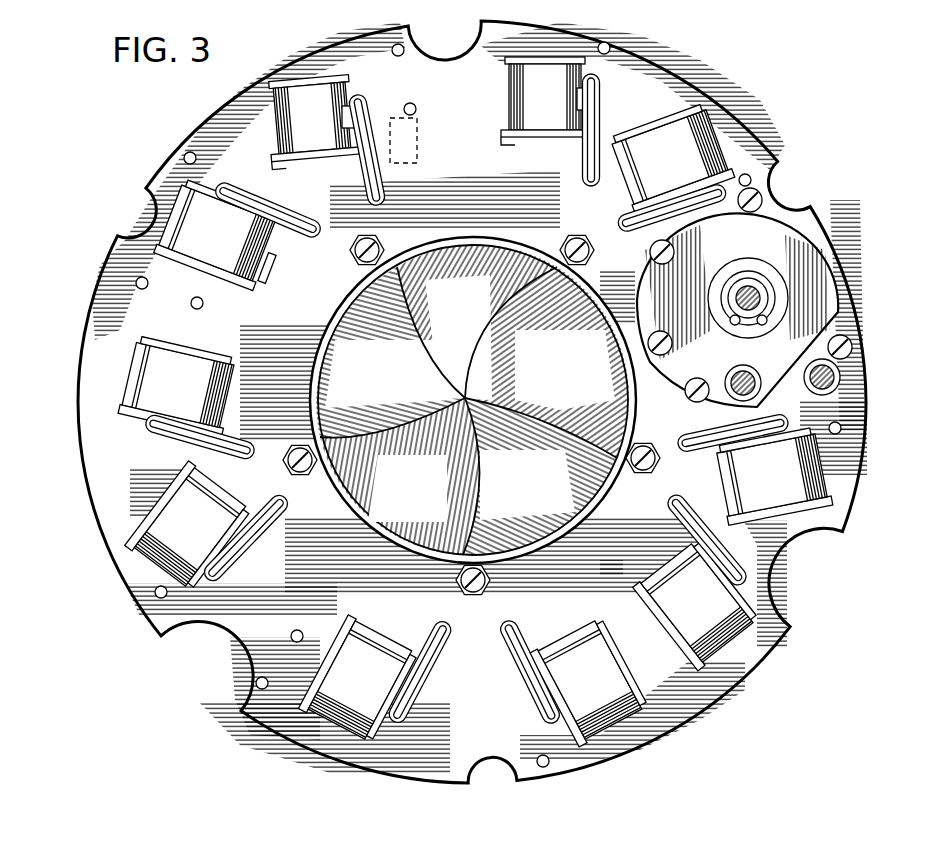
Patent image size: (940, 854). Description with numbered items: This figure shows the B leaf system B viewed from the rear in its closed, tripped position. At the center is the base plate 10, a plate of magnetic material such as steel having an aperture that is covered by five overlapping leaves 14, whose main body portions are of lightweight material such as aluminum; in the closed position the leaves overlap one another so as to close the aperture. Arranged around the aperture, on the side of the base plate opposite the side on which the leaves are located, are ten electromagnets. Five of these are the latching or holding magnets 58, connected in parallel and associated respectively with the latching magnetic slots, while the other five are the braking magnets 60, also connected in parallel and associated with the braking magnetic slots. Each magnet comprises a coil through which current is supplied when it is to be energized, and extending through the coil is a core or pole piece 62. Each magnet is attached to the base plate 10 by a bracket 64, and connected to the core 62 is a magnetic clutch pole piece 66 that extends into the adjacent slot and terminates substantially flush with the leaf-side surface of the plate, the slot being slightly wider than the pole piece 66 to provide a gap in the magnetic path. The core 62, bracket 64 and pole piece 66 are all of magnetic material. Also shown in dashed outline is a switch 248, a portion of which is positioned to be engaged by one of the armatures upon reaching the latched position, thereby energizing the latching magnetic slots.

The base plate 10 is at (830, 233).
The leaves 14 is at (467, 322).
The latching magnets 58 is at (303, 93).
The braking magnets 60 is at (560, 50).
The core or pole piece 62 is at (350, 117).
The bracket 64 is at (270, 270).
The magnetic clutch pole piece 66 is at (365, 112).
The switch 248 is at (418, 147).
The leaf system B is at (556, 370).